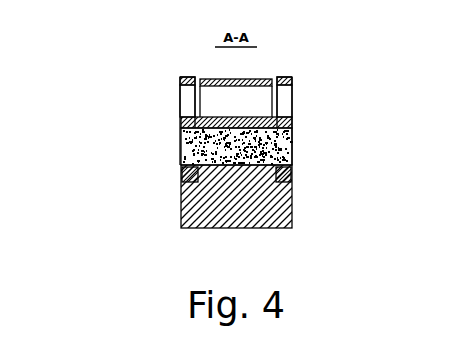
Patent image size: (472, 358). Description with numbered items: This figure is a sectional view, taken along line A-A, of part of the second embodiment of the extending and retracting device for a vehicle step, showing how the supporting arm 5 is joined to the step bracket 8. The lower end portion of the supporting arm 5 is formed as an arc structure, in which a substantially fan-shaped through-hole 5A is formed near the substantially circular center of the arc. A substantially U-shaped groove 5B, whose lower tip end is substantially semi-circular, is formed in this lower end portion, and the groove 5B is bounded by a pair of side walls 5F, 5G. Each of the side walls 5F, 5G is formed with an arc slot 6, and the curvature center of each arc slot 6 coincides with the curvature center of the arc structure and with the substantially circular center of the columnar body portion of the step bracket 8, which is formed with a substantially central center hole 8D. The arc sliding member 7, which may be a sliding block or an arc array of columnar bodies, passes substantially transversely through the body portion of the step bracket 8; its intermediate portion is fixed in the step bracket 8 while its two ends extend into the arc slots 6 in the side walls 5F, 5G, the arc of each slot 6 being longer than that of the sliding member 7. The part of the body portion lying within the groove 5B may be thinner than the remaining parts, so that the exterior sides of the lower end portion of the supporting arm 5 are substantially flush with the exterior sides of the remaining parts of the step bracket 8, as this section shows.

The supporting arm 5 is at (180, 78).
The fan-shaped through-hole 5A is at (282, 100).
The U-shaped groove 5B is at (182, 180).
The side wall of the groove 5F is at (180, 174).
The side wall of the groove 5G is at (292, 166).
The arc slot 6 is at (292, 133).
The arc sliding member 7 is at (180, 143).
The step bracket 8 is at (292, 190).
The center hole 8D is at (222, 100).